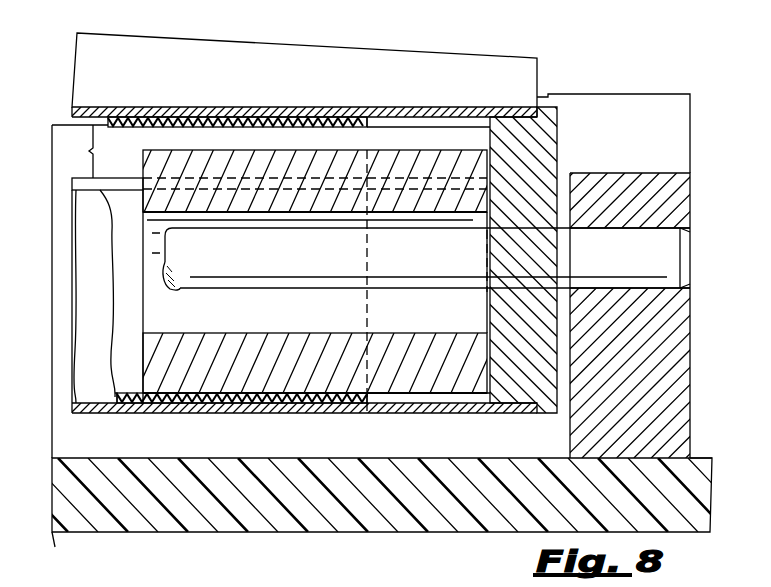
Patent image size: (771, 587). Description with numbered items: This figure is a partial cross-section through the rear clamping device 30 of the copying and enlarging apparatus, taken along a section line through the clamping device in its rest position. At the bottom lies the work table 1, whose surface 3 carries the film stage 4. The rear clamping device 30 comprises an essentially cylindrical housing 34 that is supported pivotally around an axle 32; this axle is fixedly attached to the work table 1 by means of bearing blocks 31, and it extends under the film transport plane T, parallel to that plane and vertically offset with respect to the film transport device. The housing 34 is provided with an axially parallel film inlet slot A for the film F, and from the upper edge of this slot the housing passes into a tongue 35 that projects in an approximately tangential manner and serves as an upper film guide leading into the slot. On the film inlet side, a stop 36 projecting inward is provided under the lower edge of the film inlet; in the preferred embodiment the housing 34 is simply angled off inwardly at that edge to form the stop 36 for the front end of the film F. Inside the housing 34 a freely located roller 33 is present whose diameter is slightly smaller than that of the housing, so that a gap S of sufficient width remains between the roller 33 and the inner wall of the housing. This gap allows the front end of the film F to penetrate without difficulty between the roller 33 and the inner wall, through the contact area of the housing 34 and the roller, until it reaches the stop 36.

The work table 1 is at (700, 485).
The surface of the work table 3 is at (704, 451).
The film stage 4 is at (657, 107).
The rear clamping device 30 is at (587, 82).
The bearing blocks 31 is at (680, 333).
The axle 32 is at (668, 258).
The roller 33 is at (412, 383).
The housing 34 is at (482, 407).
The tongue 35 is at (507, 60).
The stop 36 is at (85, 189).
The film transport plane T is at (55, 127).
The film inlet slot A is at (83, 151).
The gap S is at (238, 133).
The film F is at (310, 125).